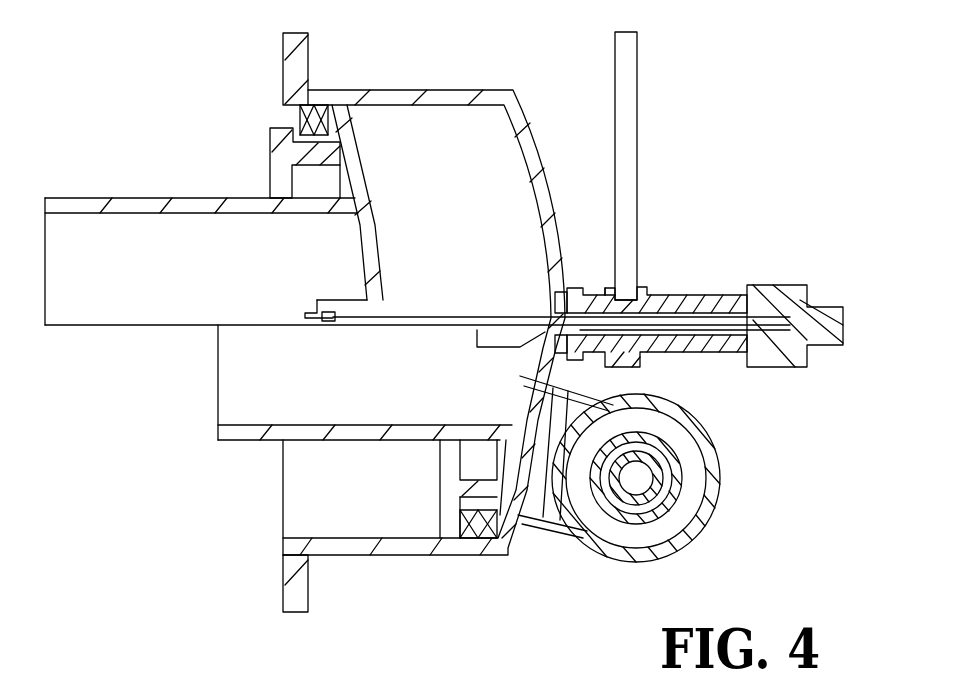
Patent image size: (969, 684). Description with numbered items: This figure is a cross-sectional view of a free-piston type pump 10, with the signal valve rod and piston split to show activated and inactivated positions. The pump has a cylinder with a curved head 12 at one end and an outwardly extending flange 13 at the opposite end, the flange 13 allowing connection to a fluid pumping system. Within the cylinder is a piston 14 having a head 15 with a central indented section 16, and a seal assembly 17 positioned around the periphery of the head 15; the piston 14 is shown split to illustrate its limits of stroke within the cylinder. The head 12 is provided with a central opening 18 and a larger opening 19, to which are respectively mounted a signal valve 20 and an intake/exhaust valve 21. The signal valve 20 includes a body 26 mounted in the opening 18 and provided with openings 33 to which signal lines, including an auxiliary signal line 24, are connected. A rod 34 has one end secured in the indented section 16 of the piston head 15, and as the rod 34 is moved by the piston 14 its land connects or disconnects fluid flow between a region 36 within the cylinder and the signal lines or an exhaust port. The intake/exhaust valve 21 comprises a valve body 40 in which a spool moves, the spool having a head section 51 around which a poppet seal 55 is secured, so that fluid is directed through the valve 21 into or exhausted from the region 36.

The free-piston type pump 10 is at (163, 443).
The curved head 12 is at (434, 317).
The outwardly extending flange 13 is at (256, 331).
The piston 14 is at (278, 342).
The head 15 is at (316, 198).
The central indented section 16 is at (387, 328).
The seal assembly 17 is at (348, 345).
The central opening 18 is at (527, 301).
The larger opening 19 is at (540, 460).
The signal valve 20 is at (705, 199).
The intake/exhaust valve 21 is at (670, 487).
The auxiliary signal line 24 is at (664, 166).
The body 26 is at (705, 300).
The openings 33 is at (651, 268).
The rod 34 is at (561, 284).
The region 36 is at (444, 168).
The valve body 40 is at (648, 484).
The head section 51 is at (685, 478).
The poppet seal 55 is at (687, 494).